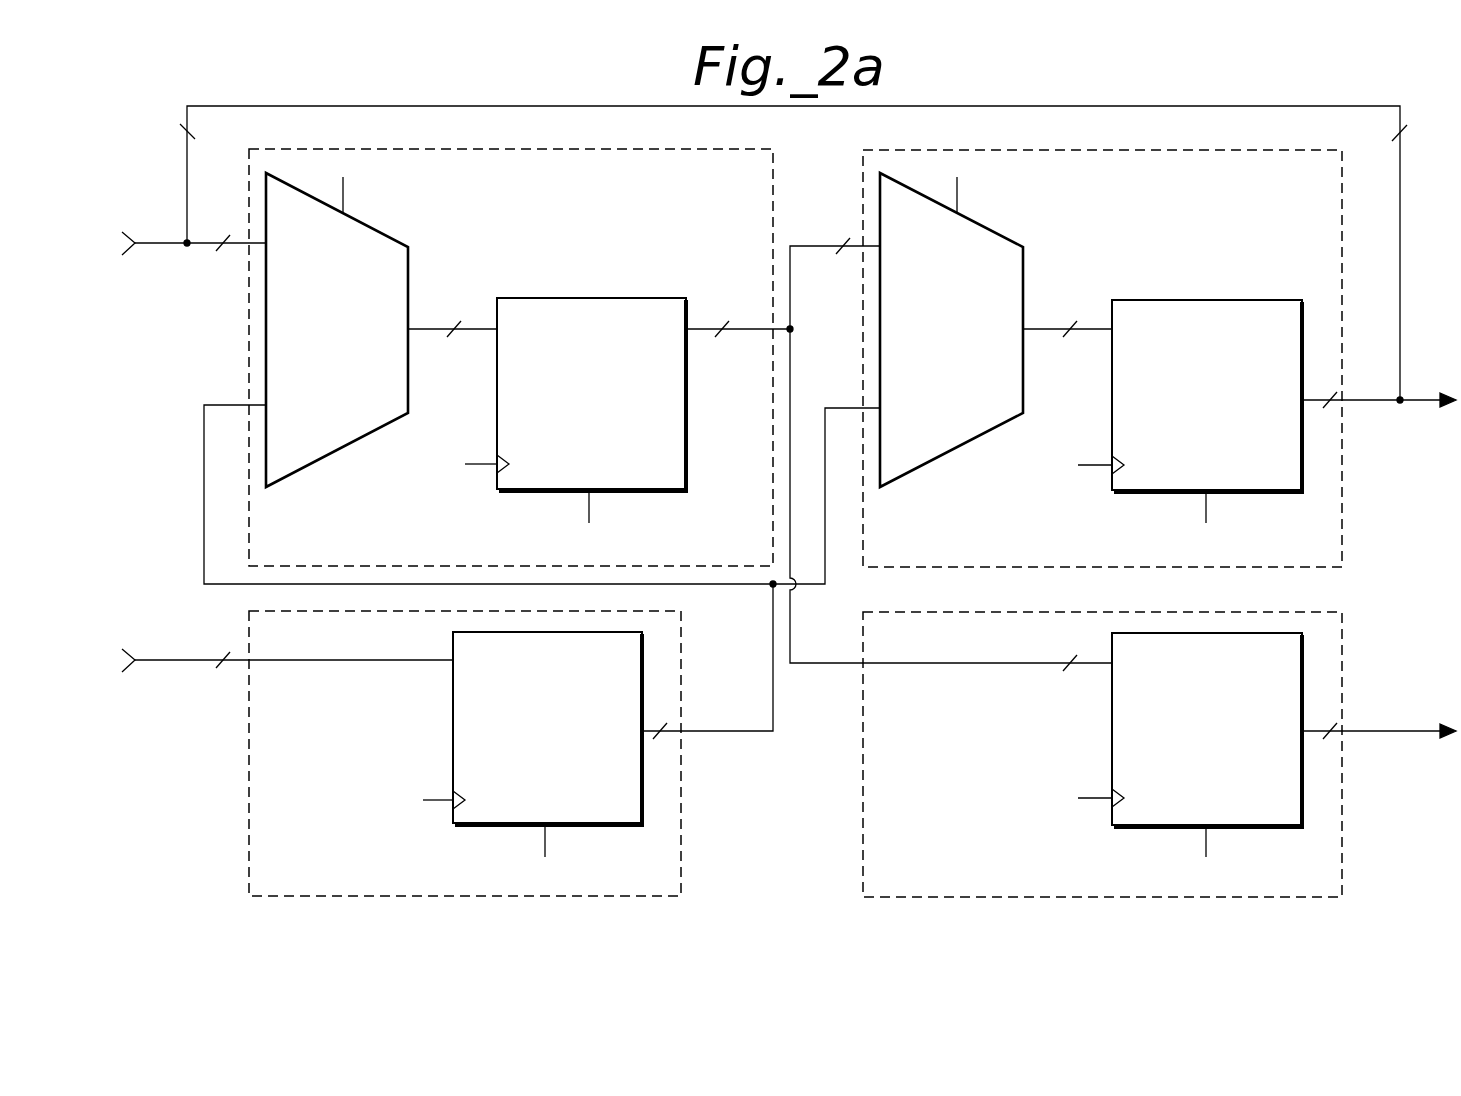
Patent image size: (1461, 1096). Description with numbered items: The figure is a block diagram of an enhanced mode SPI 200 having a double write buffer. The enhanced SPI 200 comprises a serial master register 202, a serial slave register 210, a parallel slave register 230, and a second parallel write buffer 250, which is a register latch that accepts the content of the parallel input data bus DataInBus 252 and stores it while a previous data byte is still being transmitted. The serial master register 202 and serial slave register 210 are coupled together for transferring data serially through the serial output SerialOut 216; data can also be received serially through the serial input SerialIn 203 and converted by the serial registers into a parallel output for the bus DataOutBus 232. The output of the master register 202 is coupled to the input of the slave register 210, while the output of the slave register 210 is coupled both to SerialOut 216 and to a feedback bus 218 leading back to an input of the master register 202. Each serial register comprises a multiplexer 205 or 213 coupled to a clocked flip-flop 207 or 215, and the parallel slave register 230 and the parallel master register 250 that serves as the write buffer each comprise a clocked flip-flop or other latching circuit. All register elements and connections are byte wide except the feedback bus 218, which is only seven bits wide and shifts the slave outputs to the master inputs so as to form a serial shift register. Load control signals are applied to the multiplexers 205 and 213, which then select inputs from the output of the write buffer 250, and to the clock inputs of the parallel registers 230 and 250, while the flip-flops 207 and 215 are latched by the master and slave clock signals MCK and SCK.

The enhanced mode SPI 200 is at (237, 85).
The serial master register 202 is at (775, 180).
The serial input SerialIn 203 is at (147, 243).
The multiplexer 205 is at (370, 206).
The clocked flip-flop 207 is at (588, 298).
The serial slave register 210 is at (1344, 176).
The multiplexer 213 is at (984, 206).
The clocked flip-flop 215 is at (1206, 300).
The serial output SerialOut 216 is at (1418, 400).
The feedback bus 218 is at (1197, 106).
The parallel slave register 230 is at (1344, 635).
The DataOutBus 232 is at (1385, 731).
The second parallel write buffer 250 is at (683, 633).
The DataInBus 252 is at (147, 660).